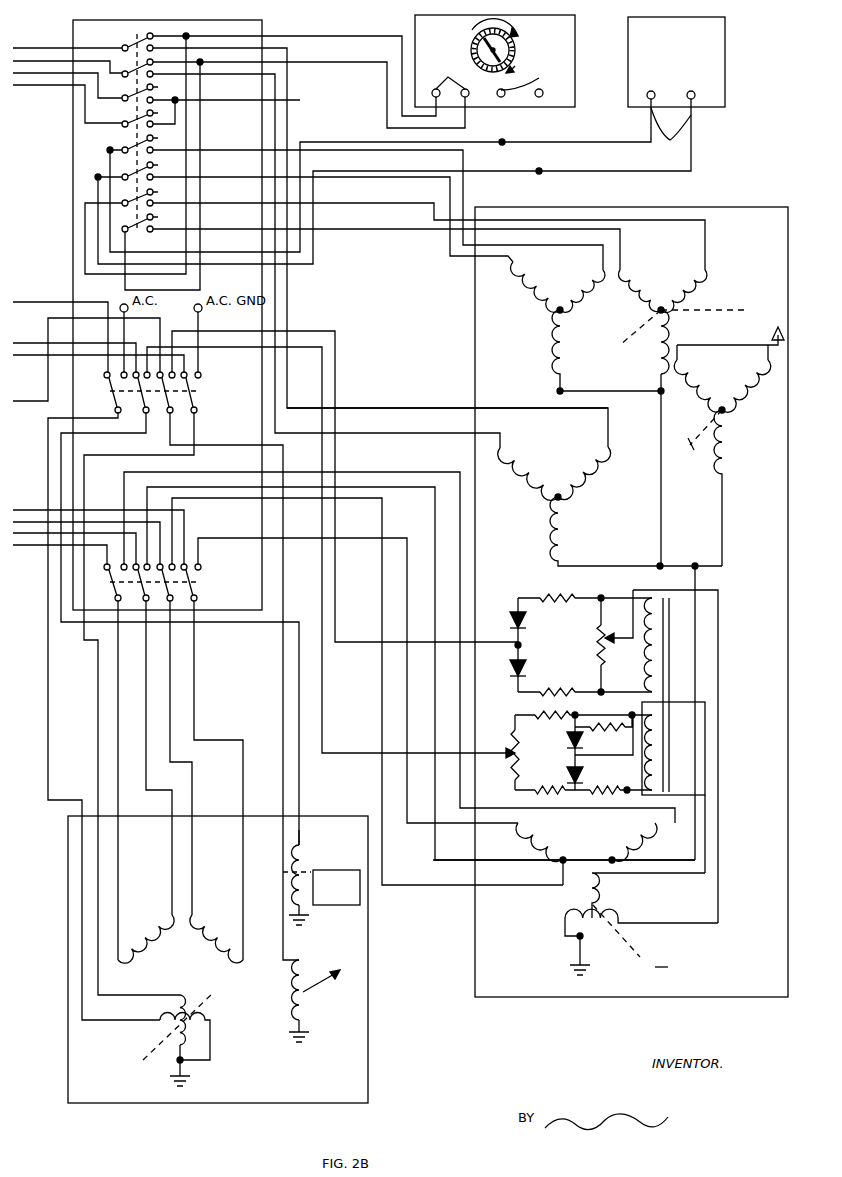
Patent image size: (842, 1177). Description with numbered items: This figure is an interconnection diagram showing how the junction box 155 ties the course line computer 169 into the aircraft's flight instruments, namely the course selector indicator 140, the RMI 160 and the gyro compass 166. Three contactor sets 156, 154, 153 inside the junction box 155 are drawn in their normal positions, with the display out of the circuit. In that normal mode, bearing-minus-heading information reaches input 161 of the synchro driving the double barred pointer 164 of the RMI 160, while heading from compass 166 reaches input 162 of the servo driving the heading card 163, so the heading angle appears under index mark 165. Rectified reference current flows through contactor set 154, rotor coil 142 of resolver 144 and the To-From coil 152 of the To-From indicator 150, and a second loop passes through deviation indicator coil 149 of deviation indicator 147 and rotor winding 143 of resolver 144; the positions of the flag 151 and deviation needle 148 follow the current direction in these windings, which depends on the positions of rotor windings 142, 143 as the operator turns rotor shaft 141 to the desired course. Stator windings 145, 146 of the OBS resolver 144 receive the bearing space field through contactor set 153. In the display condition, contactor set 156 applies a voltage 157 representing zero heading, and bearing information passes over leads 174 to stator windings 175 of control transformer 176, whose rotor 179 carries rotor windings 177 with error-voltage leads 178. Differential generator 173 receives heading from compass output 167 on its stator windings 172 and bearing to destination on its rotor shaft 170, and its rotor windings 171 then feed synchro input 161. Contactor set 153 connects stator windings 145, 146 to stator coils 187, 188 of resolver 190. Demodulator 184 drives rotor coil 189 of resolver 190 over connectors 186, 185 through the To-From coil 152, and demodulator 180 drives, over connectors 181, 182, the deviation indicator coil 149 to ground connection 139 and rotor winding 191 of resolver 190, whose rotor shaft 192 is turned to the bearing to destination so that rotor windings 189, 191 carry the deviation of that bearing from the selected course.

The ground connection 139 is at (302, 912).
The Course Selector Indicator 140 is at (368, 1022).
The rotor shaft 141 is at (153, 1050).
The rotor coil 142 is at (203, 1022).
The rotor winding 143 is at (186, 998).
The Course Selector Indicator resolver 144 is at (191, 963).
The stator winding 145 is at (148, 941).
The stator winding 146 is at (214, 940).
The Deviation Indicator 147 is at (291, 991).
The deviation needle 148 is at (314, 985).
The deviation indicator coil 149 is at (305, 970).
The To-From Indicator 150 is at (335, 863).
The To-From flag 151 is at (333, 871).
The To-From coil 152 is at (300, 850).
The contactor set 153 is at (198, 584).
The contactor set 154 is at (198, 392).
The Junction Box 155 is at (72, 244).
The contactor set 156 is at (136, 42).
The voltage representing zero heading 157 is at (300, 100).
The RMI 160 is at (575, 38).
The synchro input 161 is at (450, 78).
The servo motor input 162 is at (524, 78).
The heading card 163 is at (472, 56).
The double barred pointer 164 is at (480, 46).
The index mark 165 is at (488, 36).
The Gyro Compass 166 is at (725, 40).
The compass output 167 is at (671, 134).
The course line computer 169 is at (475, 330).
The rotor shaft 170 is at (696, 319).
The rotor windings 171 is at (700, 290).
The stator windings 172 is at (527, 294).
The differential generator 173 is at (575, 414).
The leads 174 is at (360, 410).
The stator windings 175 is at (520, 477).
The control transformer 176 is at (608, 508).
The rotor windings 177 is at (738, 402).
The rotor leads 178 is at (730, 327).
The rotor 179 is at (689, 440).
The demodulator 180 is at (565, 632).
The connector 181 is at (480, 645).
The connector 182 is at (635, 592).
The demodulator 184 is at (565, 752).
The connector 185 is at (495, 755).
The connector 186 is at (684, 702).
The stator coil 187 is at (564, 835).
The stator coil 188 is at (636, 834).
The rotor coil 189 is at (598, 884).
The resolver 190 is at (590, 889).
The rotor winding 191 is at (569, 932).
The rotor shaft 192 is at (636, 953).